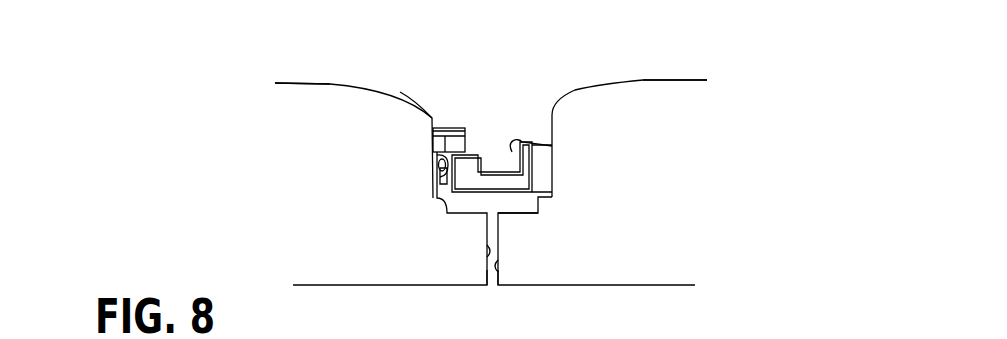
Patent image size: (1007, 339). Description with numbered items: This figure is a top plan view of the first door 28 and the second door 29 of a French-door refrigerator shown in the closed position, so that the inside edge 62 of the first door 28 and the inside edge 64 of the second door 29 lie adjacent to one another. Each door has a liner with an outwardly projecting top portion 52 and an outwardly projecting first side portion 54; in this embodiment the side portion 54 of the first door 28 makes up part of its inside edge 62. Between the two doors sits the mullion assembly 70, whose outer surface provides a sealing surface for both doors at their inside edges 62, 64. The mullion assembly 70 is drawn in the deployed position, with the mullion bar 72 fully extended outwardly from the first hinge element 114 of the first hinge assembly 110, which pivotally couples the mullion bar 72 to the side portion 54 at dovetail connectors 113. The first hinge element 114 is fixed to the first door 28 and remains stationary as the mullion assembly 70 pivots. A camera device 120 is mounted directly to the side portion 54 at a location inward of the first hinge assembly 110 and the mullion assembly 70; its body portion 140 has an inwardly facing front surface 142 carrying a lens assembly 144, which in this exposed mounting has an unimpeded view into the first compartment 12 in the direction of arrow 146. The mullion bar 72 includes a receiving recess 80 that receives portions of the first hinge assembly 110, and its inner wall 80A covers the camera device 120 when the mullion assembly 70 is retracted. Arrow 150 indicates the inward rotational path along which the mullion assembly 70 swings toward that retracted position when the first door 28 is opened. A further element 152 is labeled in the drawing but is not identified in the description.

The first compartment 12 is at (471, 41).
The first door 28 is at (302, 76).
The second door 29 is at (698, 68).
The top portion 52 is at (345, 100).
The first side portion 54 is at (430, 117).
The inside edge 62 is at (487, 250).
The inside edge 64 is at (497, 264).
The mullion assembly 70 is at (549, 163).
The mullion bar 72 is at (512, 196).
The receiving recess 80 is at (537, 190).
The inner wall 80A is at (557, 145).
The first hinge assembly 110 is at (437, 198).
The dovetail connectors 113 is at (433, 178).
The first hinge element 114 is at (433, 157).
The camera device 120 is at (441, 124).
The body portion 140 is at (498, 100).
The front surface 142 is at (468, 133).
The lens assembly 144 is at (448, 128).
The arrow 146 is at (463, 125).
The arrow 150 is at (542, 136).
The seal block 152 is at (433, 145).